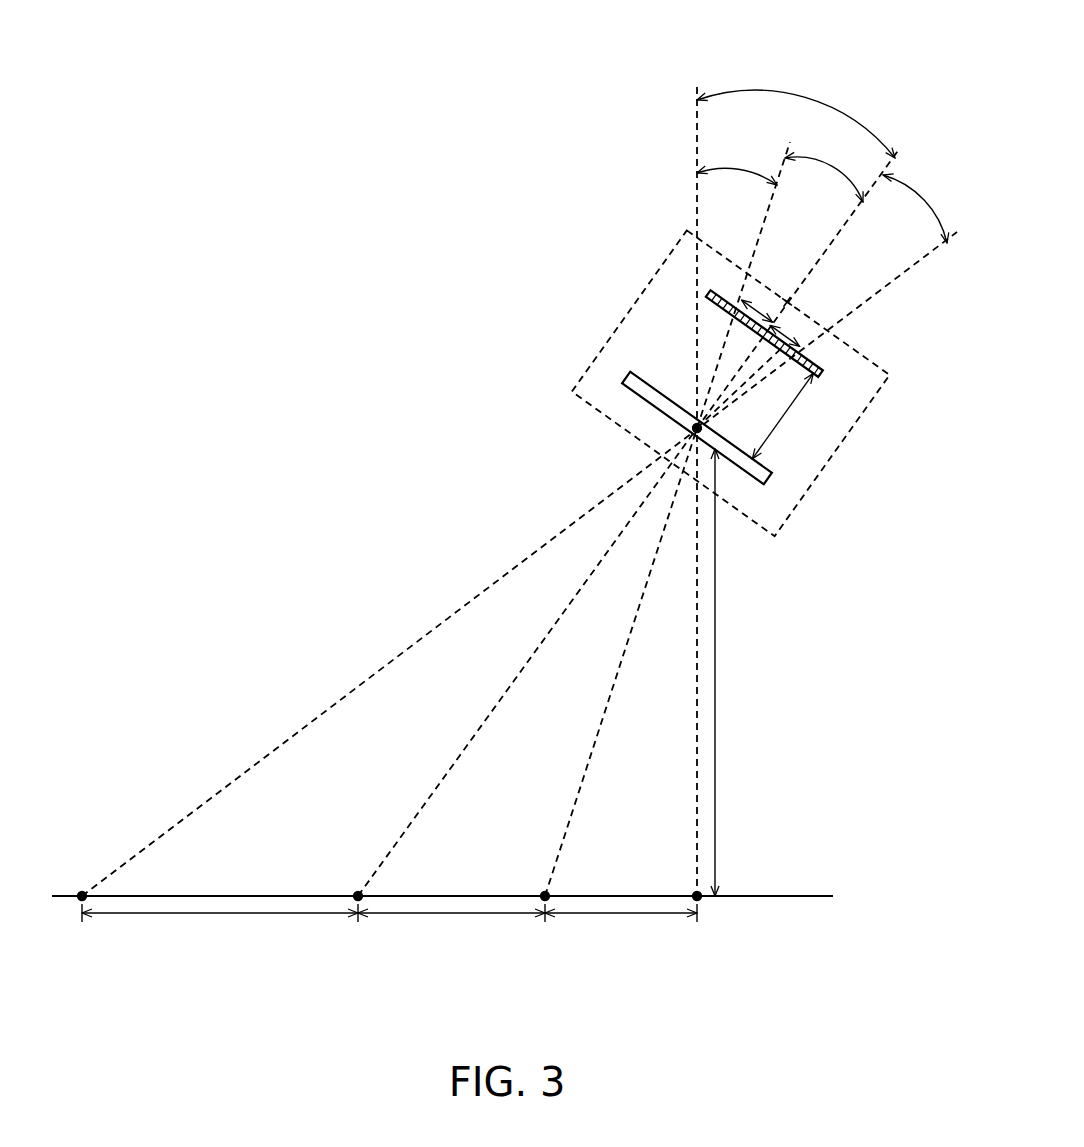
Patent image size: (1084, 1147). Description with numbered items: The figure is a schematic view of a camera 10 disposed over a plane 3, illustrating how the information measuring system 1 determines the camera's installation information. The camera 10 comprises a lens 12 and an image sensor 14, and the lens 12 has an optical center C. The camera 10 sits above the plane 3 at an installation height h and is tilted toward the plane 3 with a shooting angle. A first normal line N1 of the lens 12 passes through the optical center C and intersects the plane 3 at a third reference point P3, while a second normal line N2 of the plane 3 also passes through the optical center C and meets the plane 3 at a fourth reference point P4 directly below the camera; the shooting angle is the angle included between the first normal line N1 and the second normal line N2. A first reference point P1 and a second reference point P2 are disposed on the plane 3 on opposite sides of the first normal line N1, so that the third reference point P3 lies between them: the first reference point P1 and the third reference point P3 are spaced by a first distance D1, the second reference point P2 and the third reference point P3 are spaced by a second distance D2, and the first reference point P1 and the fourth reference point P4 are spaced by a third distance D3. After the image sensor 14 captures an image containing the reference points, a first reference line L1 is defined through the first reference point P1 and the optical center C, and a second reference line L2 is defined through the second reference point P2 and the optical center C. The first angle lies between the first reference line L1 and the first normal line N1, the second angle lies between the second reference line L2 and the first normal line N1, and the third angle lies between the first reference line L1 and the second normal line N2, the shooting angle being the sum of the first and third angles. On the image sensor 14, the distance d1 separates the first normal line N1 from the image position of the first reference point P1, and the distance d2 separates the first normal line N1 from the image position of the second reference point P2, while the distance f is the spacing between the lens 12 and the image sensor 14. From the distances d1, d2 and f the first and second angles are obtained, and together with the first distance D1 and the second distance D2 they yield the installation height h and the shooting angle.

The information measuring system 1 is at (338, 82).
The plane 3 is at (783, 897).
The camera 10 is at (846, 437).
The lens 12 is at (640, 378).
The image sensor 14 is at (712, 294).
The optical center C is at (694, 430).
The first normal line N1 is at (473, 741).
The second normal line N2 is at (697, 740).
The first reference line L1 is at (602, 740).
The second reference line L2 is at (291, 741).
The first reference point P1 is at (544, 893).
The second reference point P2 is at (81, 893).
The third reference point P3 is at (357, 893).
The fourth reference point P4 is at (696, 893).
The first distance D1 is at (451, 925).
The second distance D2 is at (220, 925).
The third distance D3 is at (621, 925).
The distance d1 is at (760, 306).
The distance d2 is at (792, 334).
The distance f is at (782, 415).
The installation height h is at (728, 672).